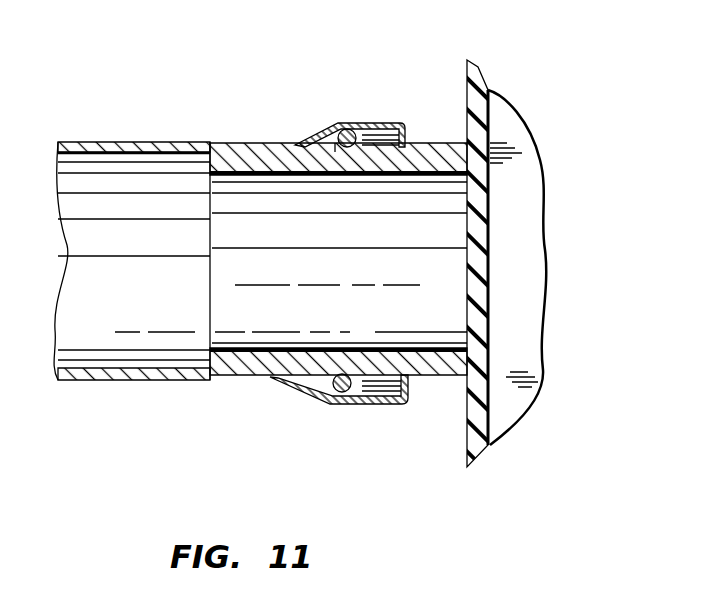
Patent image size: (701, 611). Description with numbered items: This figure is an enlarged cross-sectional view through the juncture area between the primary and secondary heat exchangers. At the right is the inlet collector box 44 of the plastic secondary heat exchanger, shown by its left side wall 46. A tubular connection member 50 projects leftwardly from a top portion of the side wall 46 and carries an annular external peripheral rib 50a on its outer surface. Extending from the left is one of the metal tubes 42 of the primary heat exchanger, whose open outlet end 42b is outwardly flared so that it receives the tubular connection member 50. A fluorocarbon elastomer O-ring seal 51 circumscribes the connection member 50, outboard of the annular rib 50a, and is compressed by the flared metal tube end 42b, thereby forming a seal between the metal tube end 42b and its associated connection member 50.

The metal tube 42 is at (110, 381).
The open outlet end of metal tube 42b is at (384, 123).
The inlet collector box 44 is at (528, 118).
The left side wall 46 is at (466, 90).
The tubular connection member 50 is at (432, 377).
The annular external peripheral rib 50a is at (367, 122).
The O-ring seal 51 is at (333, 143).